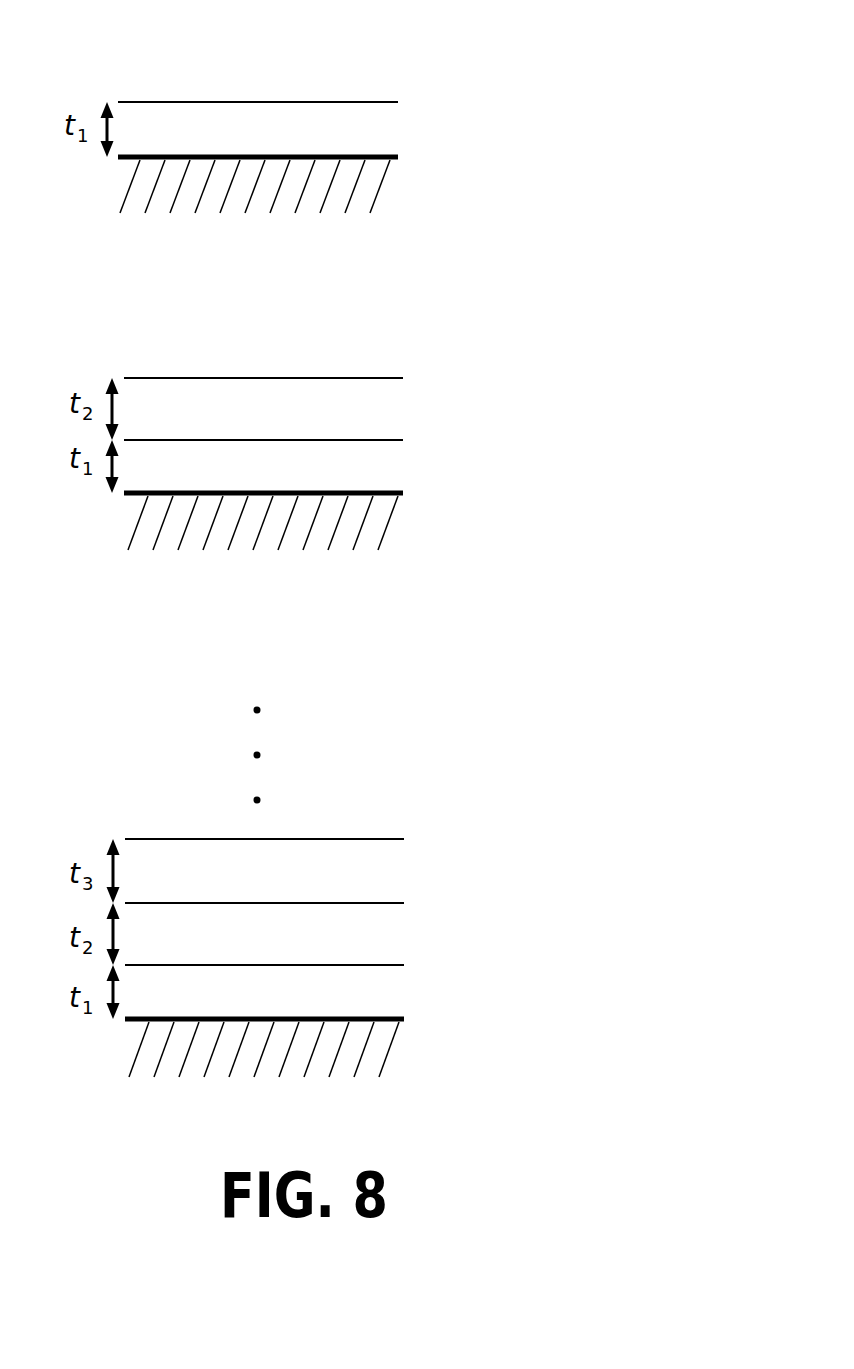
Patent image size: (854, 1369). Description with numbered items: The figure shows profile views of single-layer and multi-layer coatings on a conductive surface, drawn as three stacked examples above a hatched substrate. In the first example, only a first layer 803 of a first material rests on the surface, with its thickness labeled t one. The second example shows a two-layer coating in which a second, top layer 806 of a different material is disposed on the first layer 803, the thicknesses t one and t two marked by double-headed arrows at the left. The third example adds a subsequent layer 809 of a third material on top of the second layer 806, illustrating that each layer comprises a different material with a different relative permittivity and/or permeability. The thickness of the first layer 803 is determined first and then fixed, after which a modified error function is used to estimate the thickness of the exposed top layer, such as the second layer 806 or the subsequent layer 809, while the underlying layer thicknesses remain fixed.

The first layer 803 is at (433, 126).
The second layer 806 is at (433, 408).
The subsequent layer 809 is at (433, 868).